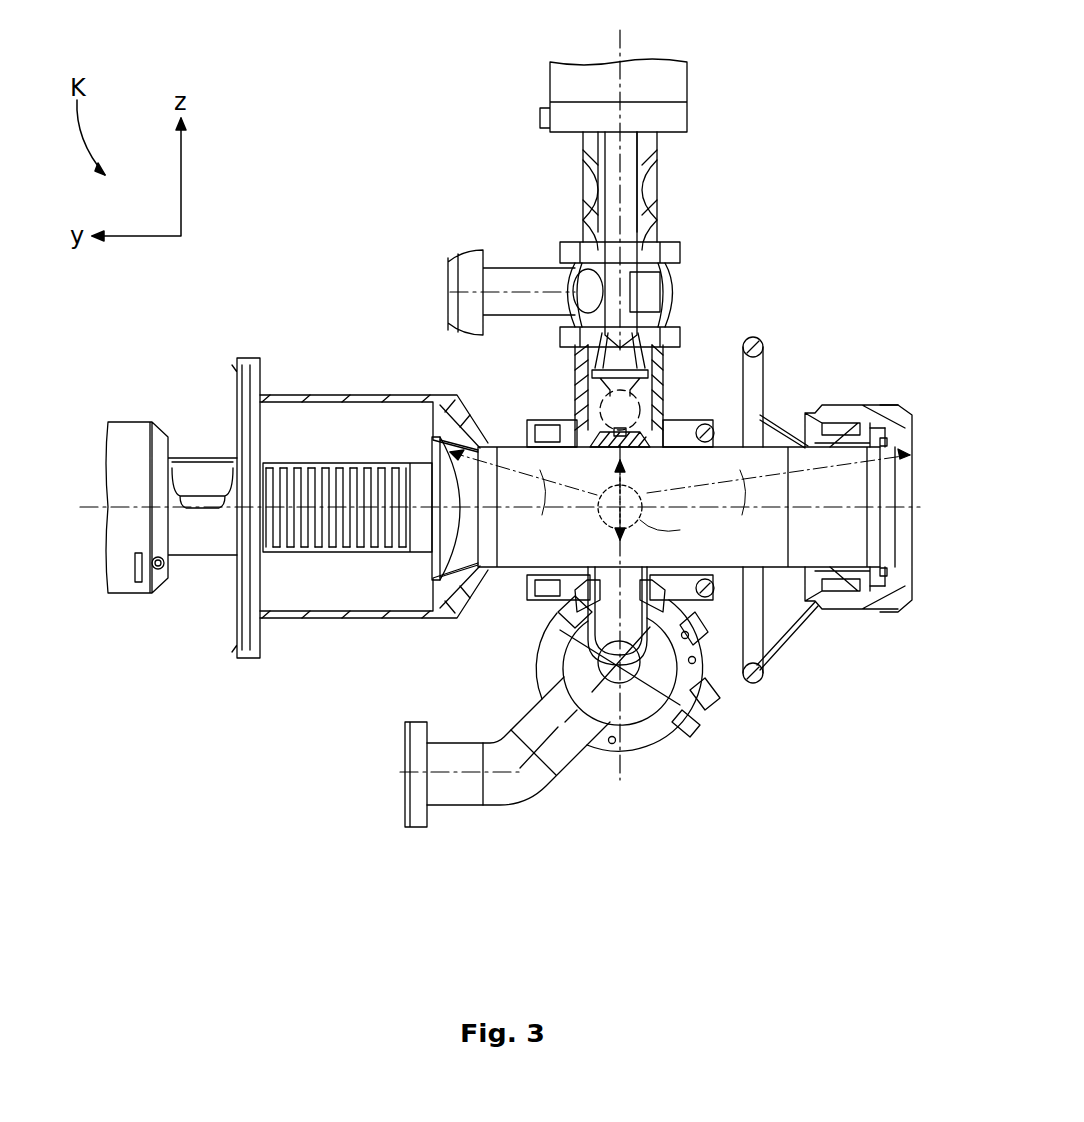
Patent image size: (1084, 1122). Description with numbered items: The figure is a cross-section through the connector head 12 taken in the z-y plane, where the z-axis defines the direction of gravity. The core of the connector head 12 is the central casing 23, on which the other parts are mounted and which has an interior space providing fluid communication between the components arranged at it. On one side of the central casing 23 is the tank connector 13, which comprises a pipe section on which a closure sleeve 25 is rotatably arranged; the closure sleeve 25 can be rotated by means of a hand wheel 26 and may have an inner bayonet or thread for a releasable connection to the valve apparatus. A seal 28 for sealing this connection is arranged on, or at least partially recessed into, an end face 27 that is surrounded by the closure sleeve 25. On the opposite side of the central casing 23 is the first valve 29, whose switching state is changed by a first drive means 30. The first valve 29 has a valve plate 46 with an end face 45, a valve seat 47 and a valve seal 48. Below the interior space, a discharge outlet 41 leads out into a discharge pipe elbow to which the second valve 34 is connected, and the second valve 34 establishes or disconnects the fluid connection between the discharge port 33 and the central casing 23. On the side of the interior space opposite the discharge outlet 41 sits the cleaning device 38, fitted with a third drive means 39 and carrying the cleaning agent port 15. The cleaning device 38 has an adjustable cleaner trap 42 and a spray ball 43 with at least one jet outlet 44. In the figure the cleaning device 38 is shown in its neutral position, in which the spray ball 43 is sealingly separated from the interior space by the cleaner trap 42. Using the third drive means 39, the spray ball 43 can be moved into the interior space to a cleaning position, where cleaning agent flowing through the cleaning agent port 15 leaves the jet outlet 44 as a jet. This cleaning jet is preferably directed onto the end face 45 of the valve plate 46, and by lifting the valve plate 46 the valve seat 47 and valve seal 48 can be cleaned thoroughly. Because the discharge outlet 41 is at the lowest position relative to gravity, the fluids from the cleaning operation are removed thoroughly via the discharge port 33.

The connector head 12 is at (348, 125).
The tank connector 13 is at (876, 580).
The cleaning agent port 15 is at (537, 278).
The central casing 23 is at (518, 438).
The closure sleeve 25 is at (840, 410).
The hand wheel 26 is at (755, 344).
The end face 27 is at (886, 433).
The seal 28 is at (885, 598).
The first valve 29 is at (322, 398).
The first drive means 30 is at (134, 438).
The discharge port 33 is at (470, 798).
The second valve 34 is at (657, 682).
The cleaning device 38 is at (570, 372).
The third drive means 39 is at (668, 112).
The discharge outlet 41 is at (622, 584).
The cleaner trap 42 is at (658, 437).
The spray ball 43 is at (652, 405).
The jet outlet 44 is at (645, 380).
The end face 45 is at (440, 600).
The valve plate 46 is at (450, 450).
The valve seat 47 is at (458, 545).
The valve seal 48 is at (435, 557).